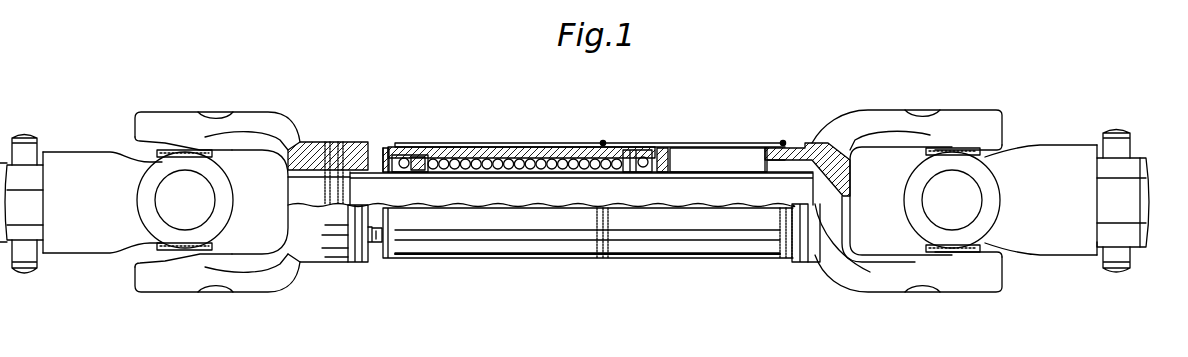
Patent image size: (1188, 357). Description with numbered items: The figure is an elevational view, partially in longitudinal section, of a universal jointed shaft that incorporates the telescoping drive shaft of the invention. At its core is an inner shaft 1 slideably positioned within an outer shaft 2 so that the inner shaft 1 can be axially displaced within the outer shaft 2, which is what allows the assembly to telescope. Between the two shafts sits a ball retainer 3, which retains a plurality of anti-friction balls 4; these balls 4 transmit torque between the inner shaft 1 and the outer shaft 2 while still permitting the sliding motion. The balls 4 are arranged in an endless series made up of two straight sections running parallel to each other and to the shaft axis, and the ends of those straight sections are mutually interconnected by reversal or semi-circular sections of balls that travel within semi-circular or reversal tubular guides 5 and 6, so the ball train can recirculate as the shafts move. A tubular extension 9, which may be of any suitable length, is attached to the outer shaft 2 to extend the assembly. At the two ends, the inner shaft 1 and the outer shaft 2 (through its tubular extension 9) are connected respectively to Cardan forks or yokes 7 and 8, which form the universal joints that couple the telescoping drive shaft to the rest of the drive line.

The inner shaft 1 is at (375, 187).
The outer shaft 2 is at (567, 153).
The ball retainer 3 is at (632, 155).
The anti-friction balls 4 is at (493, 165).
The reversal tubular guide 5 is at (660, 152).
The reversal tubular guide 6 is at (403, 158).
The Cardan yoke 7 is at (147, 122).
The Cardan yoke 8 is at (978, 120).
The tubular extension 9 is at (737, 148).